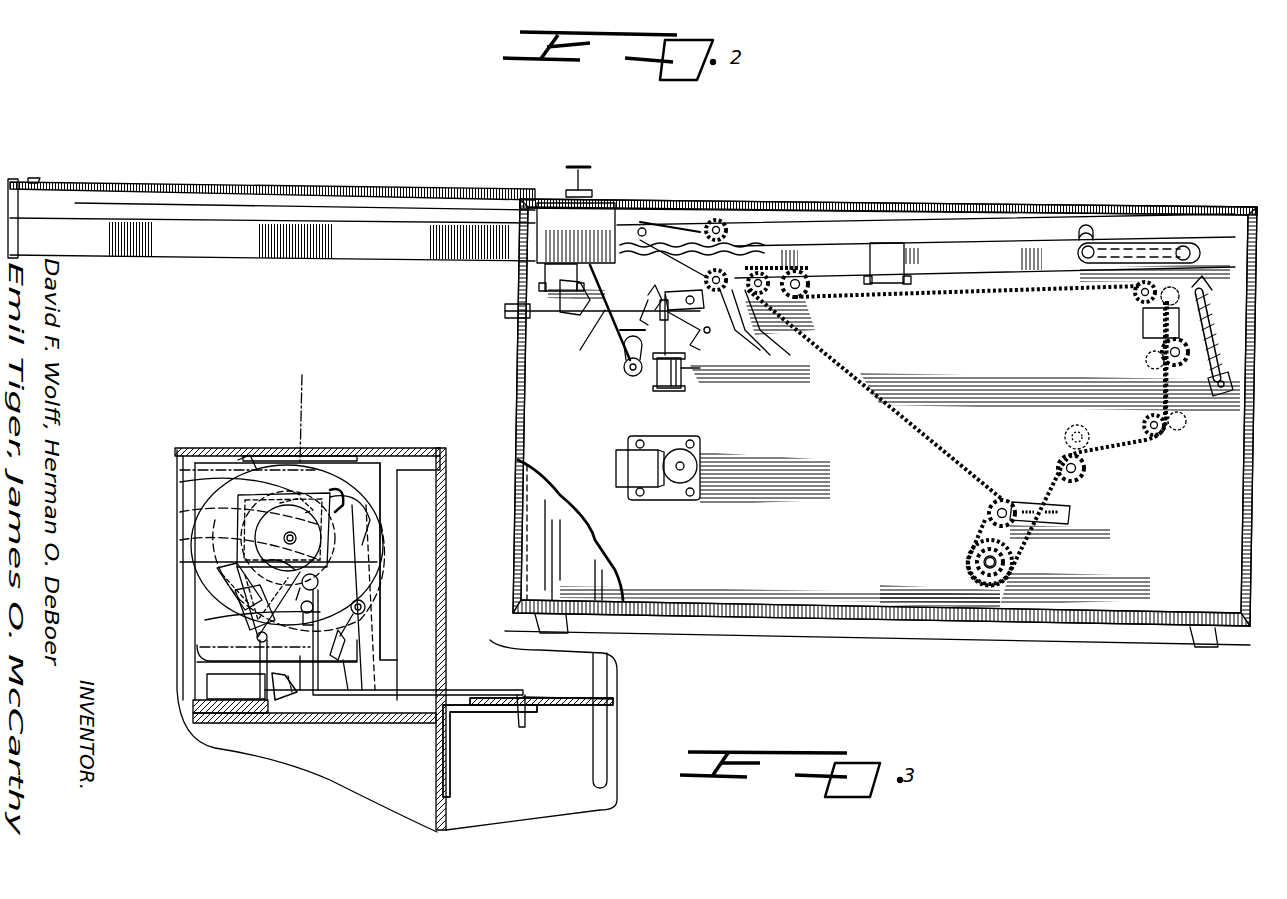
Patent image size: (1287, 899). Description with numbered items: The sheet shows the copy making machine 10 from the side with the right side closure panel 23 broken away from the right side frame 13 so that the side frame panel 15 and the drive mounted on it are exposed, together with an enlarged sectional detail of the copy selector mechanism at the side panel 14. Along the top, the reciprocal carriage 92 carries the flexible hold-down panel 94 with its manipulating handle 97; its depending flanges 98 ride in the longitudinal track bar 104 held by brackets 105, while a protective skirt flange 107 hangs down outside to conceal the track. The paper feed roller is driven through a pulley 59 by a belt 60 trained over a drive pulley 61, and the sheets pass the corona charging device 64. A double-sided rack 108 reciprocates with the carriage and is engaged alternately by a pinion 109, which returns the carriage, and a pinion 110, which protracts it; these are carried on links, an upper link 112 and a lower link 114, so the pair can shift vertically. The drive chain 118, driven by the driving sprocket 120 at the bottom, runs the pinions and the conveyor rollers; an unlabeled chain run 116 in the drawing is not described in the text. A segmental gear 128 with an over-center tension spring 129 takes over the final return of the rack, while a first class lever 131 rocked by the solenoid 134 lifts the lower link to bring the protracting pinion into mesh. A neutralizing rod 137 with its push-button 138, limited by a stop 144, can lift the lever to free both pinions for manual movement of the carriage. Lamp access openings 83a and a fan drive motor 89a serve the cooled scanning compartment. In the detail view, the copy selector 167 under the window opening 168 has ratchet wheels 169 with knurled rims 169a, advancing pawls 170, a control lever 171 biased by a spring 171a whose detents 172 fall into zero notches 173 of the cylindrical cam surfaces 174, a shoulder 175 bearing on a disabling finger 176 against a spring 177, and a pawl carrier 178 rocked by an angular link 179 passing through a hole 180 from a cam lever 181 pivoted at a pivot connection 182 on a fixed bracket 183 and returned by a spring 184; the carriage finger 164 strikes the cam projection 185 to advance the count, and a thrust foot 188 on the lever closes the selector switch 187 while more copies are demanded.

In FIG. 2, the copy making machine 10 is at (1184, 165).
In FIG. 2, the right side frame 13 is at (664, 613).
In FIG. 3, the vertical side panel 14 is at (437, 797).
In FIG. 2, the side frame panel 15 is at (860, 450).
In FIG. 2, the right side closure panel 23 is at (590, 568).
In FIG. 2, the pulley 59 is at (1086, 230).
In FIG. 2, the belt 60 is at (1120, 245).
In FIG. 2, the drive pulley 61 is at (1185, 244).
In FIG. 2, the corona charging device 64 is at (1160, 335).
In FIG. 2, the lamp access openings 83a is at (570, 308).
In FIG. 2, the drive motor 89a is at (700, 447).
In FIG. 2, the reciprocal carriage 92 is at (616, 206).
In FIG. 2, the flexible hold-down panel 94 is at (330, 185).
In FIG. 2, the manipulating handle 97 is at (580, 166).
In FIG. 2, the depending flanges 98 is at (452, 197).
In FIG. 2, the longitudinal track bar 104 is at (915, 247).
In FIG. 2, the brackets 105 is at (885, 263).
In FIG. 2, the protective skirt flange 107 is at (376, 247).
In FIG. 2, the double-sided rack 108 is at (762, 228).
In FIG. 2, the pinion 109 is at (746, 272).
In FIG. 2, the pinion 110 is at (710, 330).
In FIG. 2, the upper link 112 is at (712, 221).
In FIG. 2, the lower link 114 is at (759, 322).
In FIG. 2, the drive chain 116 is at (945, 442).
In FIG. 2, the drive chain 118 is at (1040, 513).
In FIG. 2, the driving sprocket 120 is at (975, 565).
In FIG. 2, the segmental gear 128 is at (1140, 330).
In FIG. 2, the over-center tension spring 129 is at (1150, 338).
In FIG. 2, the first class lever 131 is at (710, 335).
In FIG. 2, the solenoid 134 is at (660, 375).
In FIG. 2, the neutralizing rod 137 is at (600, 345).
In FIG. 2, the push-button 138 is at (510, 313).
In FIG. 2, the stop 144 is at (708, 335).
In FIG. 3, the carriage finger 164 is at (606, 740).
In FIG. 3, the copy selector 167 is at (322, 445).
In FIG. 3, the window opening 168 is at (248, 455).
In FIG. 3, the ratchet wheels 169 is at (276, 487).
In FIG. 3, the knurled rims 169a is at (312, 409).
In FIG. 3, the advancing pawls 170 is at (240, 487).
In FIG. 3, the control lever 171 is at (365, 590).
In FIG. 3, the spring 171a is at (345, 640).
In FIG. 3, the detents 172 is at (350, 492).
In FIG. 3, the zero notches 173 is at (370, 516).
In FIG. 3, the cylindrical cam surfaces 174 is at (318, 480).
In FIG. 3, the shoulder 175 is at (240, 516).
In FIG. 3, the disabling finger 176 is at (215, 582).
In FIG. 3, the spring 177 is at (220, 592).
In FIG. 3, the pawl carrier 178 is at (232, 616).
In FIG. 3, the angular link 179 is at (250, 640).
In FIG. 3, the hole 180 is at (440, 690).
In FIG. 3, the cam lever 181 is at (562, 695).
In FIG. 3, the pivot connection 182 is at (522, 728).
In FIG. 3, the fixed bracket 183 is at (462, 715).
In FIG. 3, the spring 184 is at (342, 618).
In FIG. 3, the cam projection 185 is at (612, 702).
In FIG. 3, the selector switch 187 is at (215, 688).
In FIG. 3, the thrust foot 188 is at (292, 705).